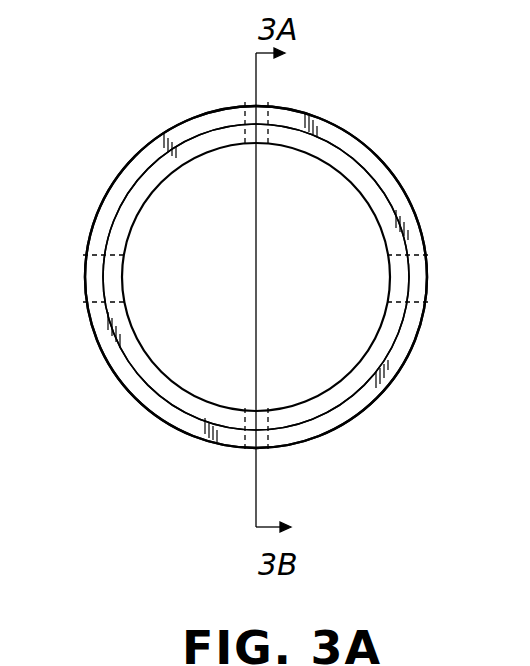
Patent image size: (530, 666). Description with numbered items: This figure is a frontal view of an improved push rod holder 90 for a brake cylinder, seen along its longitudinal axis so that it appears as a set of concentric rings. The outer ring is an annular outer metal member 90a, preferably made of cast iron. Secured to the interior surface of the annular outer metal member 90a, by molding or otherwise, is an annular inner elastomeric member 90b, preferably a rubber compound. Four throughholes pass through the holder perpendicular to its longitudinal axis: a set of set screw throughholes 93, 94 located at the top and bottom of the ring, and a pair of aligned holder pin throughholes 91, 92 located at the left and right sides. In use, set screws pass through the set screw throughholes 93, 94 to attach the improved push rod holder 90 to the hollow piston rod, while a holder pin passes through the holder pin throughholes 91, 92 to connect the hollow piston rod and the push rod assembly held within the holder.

The push rod holder 90 is at (136, 428).
The annular outer metal member 90a is at (399, 185).
The annular inner elastomeric member 90b is at (347, 162).
The holder pin throughhole 91 is at (432, 290).
The holder pin throughhole 92 is at (85, 272).
The set screw throughhole 93 is at (268, 103).
The set screw throughhole 94 is at (252, 446).